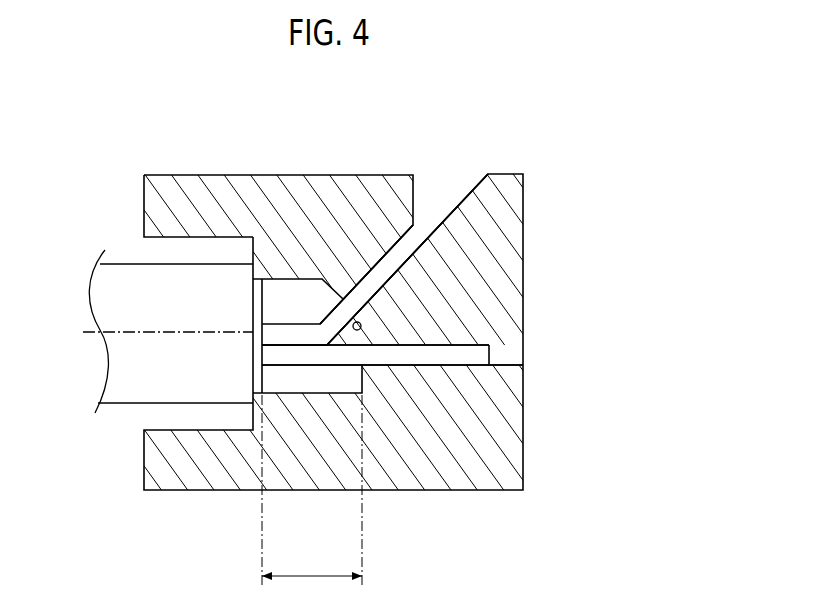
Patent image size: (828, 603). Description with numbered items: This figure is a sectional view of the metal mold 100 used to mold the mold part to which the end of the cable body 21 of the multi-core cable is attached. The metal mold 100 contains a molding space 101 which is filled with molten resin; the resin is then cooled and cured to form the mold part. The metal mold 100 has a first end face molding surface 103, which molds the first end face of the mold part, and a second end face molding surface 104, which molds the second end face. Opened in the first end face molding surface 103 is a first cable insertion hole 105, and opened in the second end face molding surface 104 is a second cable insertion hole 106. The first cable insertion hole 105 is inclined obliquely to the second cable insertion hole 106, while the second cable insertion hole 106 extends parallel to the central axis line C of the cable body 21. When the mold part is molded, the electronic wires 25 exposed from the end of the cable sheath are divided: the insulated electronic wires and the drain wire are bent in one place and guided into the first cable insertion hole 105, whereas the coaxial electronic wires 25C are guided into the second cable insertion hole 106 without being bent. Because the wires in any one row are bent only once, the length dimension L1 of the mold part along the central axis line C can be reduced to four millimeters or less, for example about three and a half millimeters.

The metal mold 100 is at (467, 490).
The molding space 101 is at (347, 383).
The first end face molding surface 103 is at (330, 292).
The second end face molding surface 104 is at (362, 322).
The first cable insertion hole 105 is at (376, 266).
The second cable insertion hole 106 is at (457, 365).
The electronic wire 25 is at (412, 248).
The coaxial electronic wire 25C is at (420, 352).
The cable body 21 is at (140, 404).
The central axis line C is at (160, 332).
The length dimension L1 is at (312, 490).